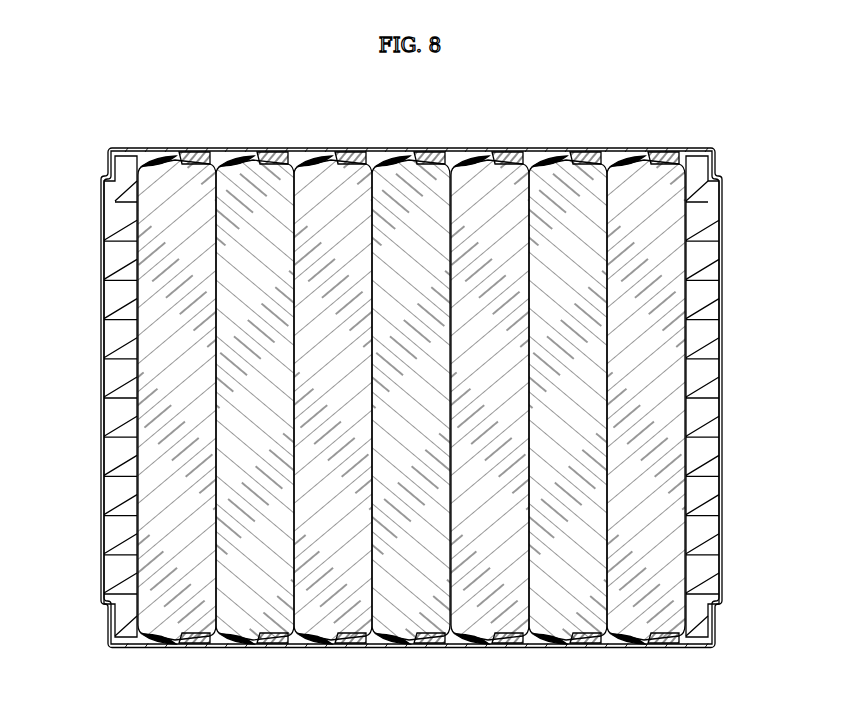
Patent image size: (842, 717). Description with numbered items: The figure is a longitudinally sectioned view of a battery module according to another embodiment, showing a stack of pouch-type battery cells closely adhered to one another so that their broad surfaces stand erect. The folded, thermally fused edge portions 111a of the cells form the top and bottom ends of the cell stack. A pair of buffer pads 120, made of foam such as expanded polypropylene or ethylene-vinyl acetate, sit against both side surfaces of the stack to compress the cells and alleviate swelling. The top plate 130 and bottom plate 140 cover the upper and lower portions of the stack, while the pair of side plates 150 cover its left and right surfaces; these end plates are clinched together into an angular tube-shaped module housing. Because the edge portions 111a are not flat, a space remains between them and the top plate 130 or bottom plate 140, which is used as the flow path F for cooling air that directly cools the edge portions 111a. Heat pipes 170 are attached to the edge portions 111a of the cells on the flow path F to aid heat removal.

The edge portion 111a is at (624, 158).
The buffer pad 120 is at (123, 387).
The top plate 130 is at (532, 150).
The bottom plate 140 is at (532, 648).
The side plate 150 is at (103, 463).
The heat pipe 170 is at (357, 156).
The flow path F is at (303, 158).